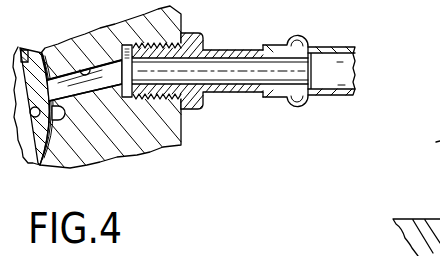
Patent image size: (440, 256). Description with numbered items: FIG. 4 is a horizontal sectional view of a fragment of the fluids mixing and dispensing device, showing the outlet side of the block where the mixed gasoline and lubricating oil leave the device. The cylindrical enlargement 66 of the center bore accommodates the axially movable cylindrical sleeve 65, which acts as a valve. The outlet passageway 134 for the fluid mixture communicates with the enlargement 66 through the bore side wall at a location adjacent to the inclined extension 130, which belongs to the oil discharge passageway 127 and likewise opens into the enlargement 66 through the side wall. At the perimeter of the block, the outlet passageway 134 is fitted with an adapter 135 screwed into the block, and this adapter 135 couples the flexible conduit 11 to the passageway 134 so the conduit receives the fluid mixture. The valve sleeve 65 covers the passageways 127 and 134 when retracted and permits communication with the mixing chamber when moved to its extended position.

The flexible conduit 11 is at (301, 40).
The cylindrical sleeve 65 is at (37, 167).
The cylindrical enlargement 66 is at (39, 51).
The discharge passageway 127 is at (66, 108).
The inclined extension 130 is at (48, 126).
The outlet passageway 134 is at (87, 67).
The adapter 135 is at (206, 42).